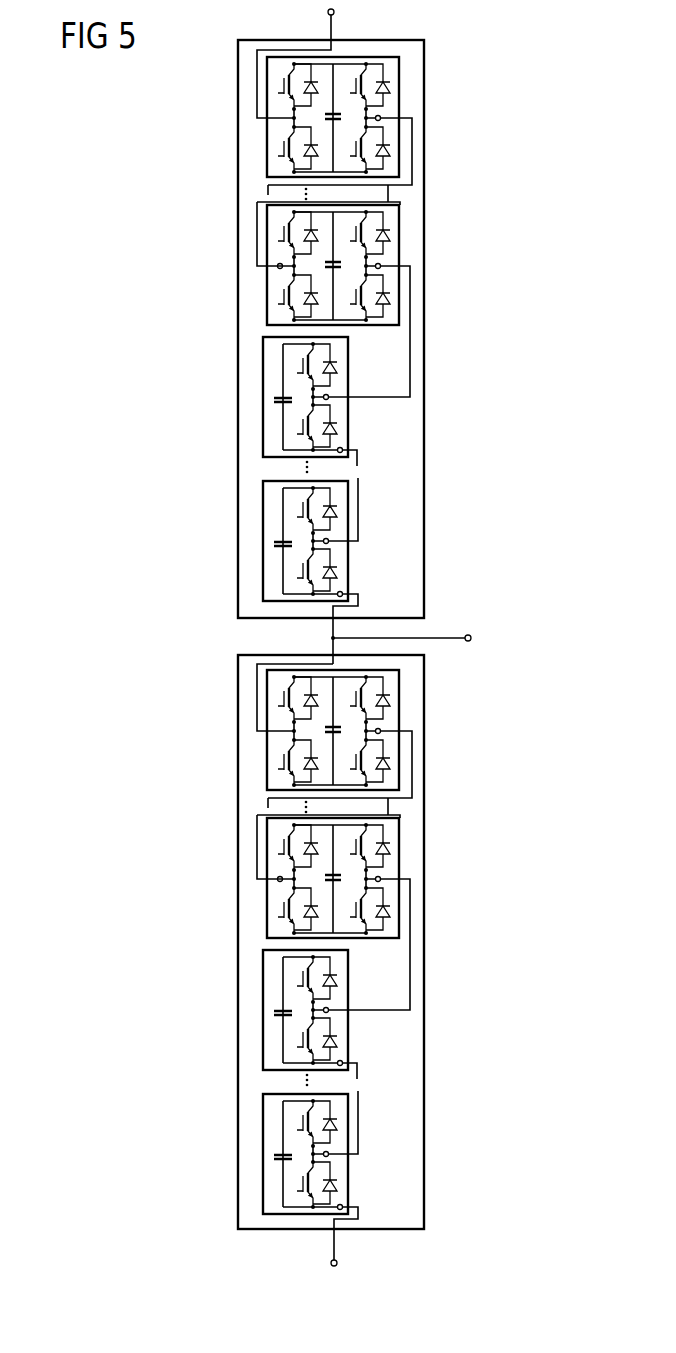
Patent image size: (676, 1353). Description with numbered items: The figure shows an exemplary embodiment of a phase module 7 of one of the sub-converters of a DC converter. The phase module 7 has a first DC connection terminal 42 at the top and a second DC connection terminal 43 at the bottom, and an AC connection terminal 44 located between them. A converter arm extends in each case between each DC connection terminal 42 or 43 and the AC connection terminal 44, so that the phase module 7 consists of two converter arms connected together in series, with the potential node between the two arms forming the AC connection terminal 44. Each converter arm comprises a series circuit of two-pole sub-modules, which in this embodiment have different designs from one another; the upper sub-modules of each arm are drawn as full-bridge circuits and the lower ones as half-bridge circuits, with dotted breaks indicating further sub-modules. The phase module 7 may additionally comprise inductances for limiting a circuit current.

The phase module 7 is at (522, 74).
The first DC connection terminal 42 is at (336, 30).
The second DC connection terminal 43 is at (337, 1244).
The AC connection terminal 44 is at (471, 637).